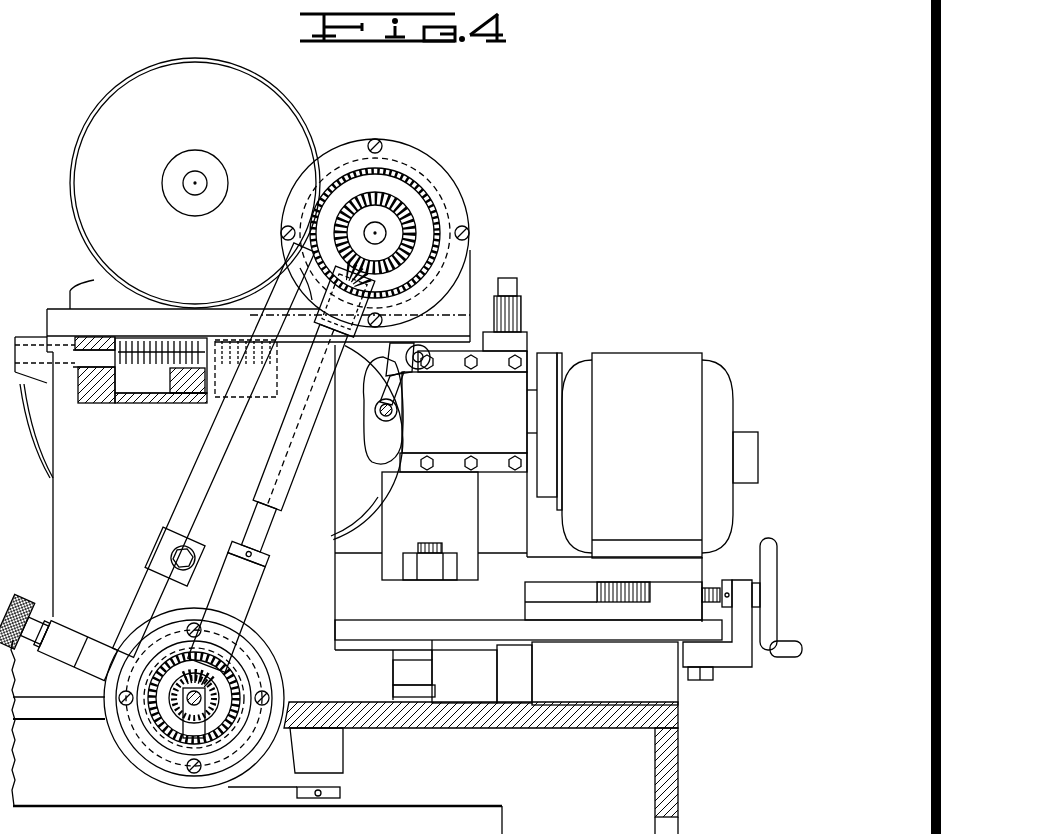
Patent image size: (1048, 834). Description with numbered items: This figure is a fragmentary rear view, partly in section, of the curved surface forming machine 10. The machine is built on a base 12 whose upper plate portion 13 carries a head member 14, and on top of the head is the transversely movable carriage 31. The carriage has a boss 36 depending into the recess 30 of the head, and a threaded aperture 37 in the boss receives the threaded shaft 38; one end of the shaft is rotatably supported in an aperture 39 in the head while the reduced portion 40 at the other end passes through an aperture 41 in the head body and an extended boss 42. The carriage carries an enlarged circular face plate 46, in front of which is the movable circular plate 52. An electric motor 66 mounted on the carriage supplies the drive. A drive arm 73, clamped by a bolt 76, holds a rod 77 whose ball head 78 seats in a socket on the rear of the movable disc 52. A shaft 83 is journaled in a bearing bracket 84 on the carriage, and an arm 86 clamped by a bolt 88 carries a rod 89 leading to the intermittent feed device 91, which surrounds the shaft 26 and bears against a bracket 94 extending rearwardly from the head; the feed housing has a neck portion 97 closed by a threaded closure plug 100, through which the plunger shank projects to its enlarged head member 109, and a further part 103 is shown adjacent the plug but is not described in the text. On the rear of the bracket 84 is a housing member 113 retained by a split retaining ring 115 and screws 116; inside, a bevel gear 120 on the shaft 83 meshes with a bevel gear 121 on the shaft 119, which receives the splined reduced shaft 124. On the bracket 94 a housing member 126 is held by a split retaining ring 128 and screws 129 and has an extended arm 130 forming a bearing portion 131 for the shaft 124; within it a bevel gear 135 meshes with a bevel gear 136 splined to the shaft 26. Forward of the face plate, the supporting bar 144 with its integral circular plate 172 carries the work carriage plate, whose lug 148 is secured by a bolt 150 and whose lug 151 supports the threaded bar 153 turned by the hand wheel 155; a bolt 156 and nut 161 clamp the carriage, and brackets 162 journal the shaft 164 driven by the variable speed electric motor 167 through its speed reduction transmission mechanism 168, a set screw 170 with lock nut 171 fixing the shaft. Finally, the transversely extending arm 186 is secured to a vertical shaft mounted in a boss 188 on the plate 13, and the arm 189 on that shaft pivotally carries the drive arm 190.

The curved surface forming machine 10 is at (104, 90).
The base 12 is at (675, 745).
The upper plate portion 13 is at (585, 706).
The head member 14 is at (53, 548).
The shaft 26 is at (193, 707).
The recess 30 is at (128, 396).
The carriage 31 is at (51, 310).
The boss 36 is at (175, 388).
The threaded aperture 37 is at (175, 374).
The threaded shaft 38 is at (142, 343).
The aperture 39 is at (279, 367).
The reduced portion 40 is at (84, 368).
The aperture 41 is at (102, 338).
The extended boss 42 is at (22, 342).
The circular face plate 46 is at (342, 462).
The movable circular plate 52 is at (390, 482).
The electric motor 66 is at (262, 76).
The drive arm 73 is at (398, 349).
The bolt 76 is at (418, 363).
The rod 77 is at (398, 394).
The ball head 78 is at (398, 411).
The shaft 83 is at (374, 230).
The bearing bracket 84 is at (470, 273).
The arm 86 is at (186, 486).
The bolt 88 is at (190, 553).
The rod 89 is at (146, 601).
The intermittent feed device 91 is at (89, 625).
The bracket 94 is at (116, 745).
The neck portion 97 is at (103, 646).
The closure plug 100 is at (60, 626).
The nut 103 is at (44, 657).
The head member 109 is at (20, 612).
The housing member 113 is at (440, 232).
The split retaining ring 115 is at (436, 172).
The screws 116 is at (381, 143).
The shaft 119 is at (288, 483).
The bevel gear 120 is at (416, 224).
The bevel gear 121 is at (372, 286).
The reduced shaft 124 is at (274, 521).
The housing member 126 is at (173, 739).
The split retaining ring 128 is at (237, 757).
The screws 129 is at (192, 775).
The extended arm 130 is at (245, 612).
The bearing portion 131 is at (258, 570).
The bevel gear 135 is at (223, 688).
The bevel gear 136 is at (172, 711).
The supporting bar 144 is at (463, 621).
The lug 148 is at (712, 657).
The bolt 150 is at (710, 678).
The lug 151 is at (741, 580).
The threaded bar 153 is at (712, 588).
The hand wheel 155 is at (770, 539).
The bolt 156 is at (429, 543).
The nut 161 is at (450, 555).
The brackets 162 is at (383, 516).
The shaft 164 is at (535, 417).
The variable speed electric motor 167 is at (669, 357).
The speed reduction transmission mechanism 168 is at (546, 358).
The set screw 170 is at (517, 293).
The lock nut 171 is at (524, 333).
The circular plate 172 is at (370, 650).
The transversely extending arm 186 is at (270, 784).
The boss 188 is at (338, 749).
The transversely extending arm 189 is at (435, 692).
The drive arm 190 is at (432, 670).